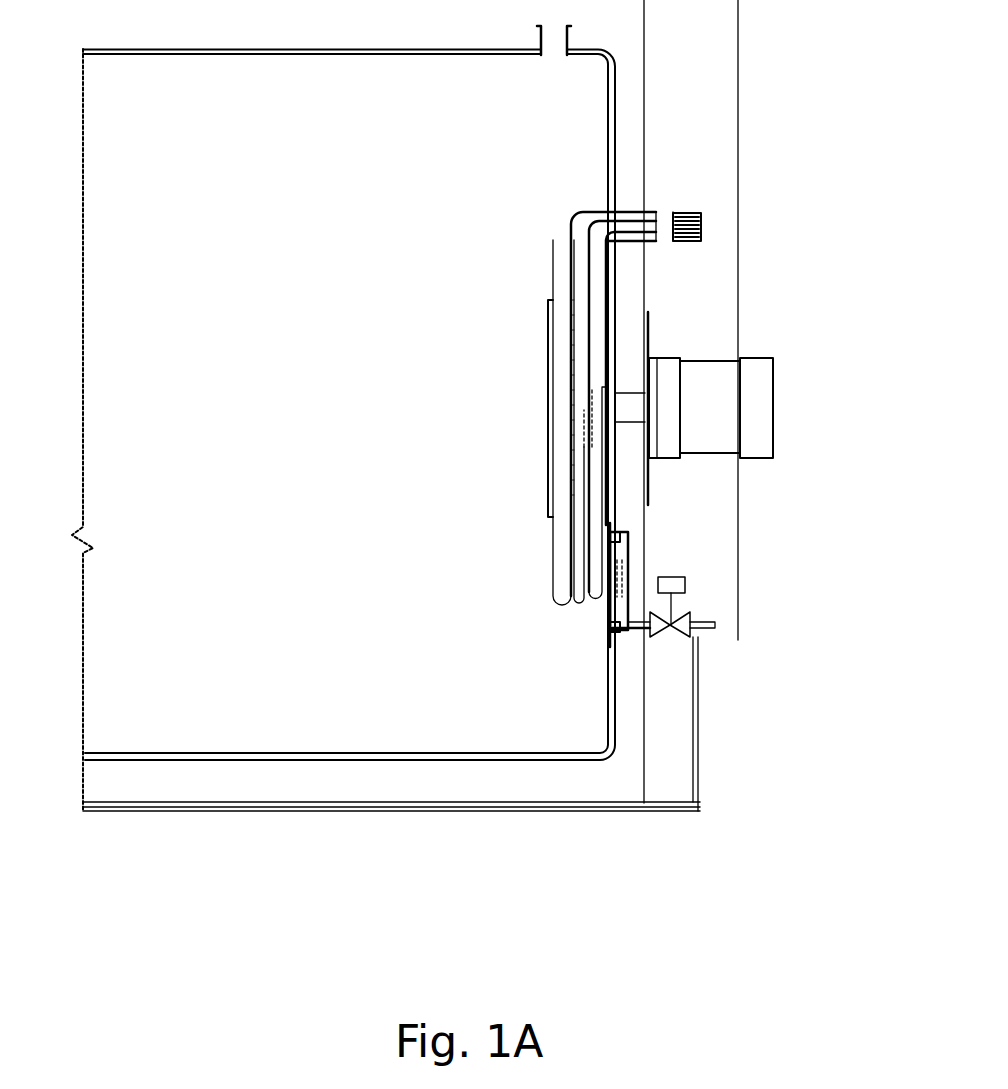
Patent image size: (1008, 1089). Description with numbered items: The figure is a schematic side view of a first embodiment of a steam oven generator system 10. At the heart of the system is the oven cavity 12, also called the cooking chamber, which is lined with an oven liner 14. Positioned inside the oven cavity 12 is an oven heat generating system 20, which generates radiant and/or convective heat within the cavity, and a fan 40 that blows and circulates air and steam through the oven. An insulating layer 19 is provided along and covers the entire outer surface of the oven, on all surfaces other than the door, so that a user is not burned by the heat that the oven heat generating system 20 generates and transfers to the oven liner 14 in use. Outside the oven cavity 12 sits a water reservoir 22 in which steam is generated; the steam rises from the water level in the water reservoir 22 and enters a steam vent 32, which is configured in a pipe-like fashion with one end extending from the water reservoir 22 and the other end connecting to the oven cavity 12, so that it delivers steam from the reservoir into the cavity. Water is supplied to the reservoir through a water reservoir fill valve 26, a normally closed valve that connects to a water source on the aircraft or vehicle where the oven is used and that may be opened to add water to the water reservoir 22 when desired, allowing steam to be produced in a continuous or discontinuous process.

The steam oven generator system 10 is at (818, 88).
The oven cavity 12 is at (342, 394).
The oven liner 14 is at (608, 101).
The insulating layer 19 is at (712, 312).
The oven heat generating system 20 is at (562, 254).
The water reservoir 22 is at (608, 624).
The water reservoir fill valve 26 is at (673, 634).
The steam vent 32 is at (622, 536).
The fan 40 is at (549, 432).